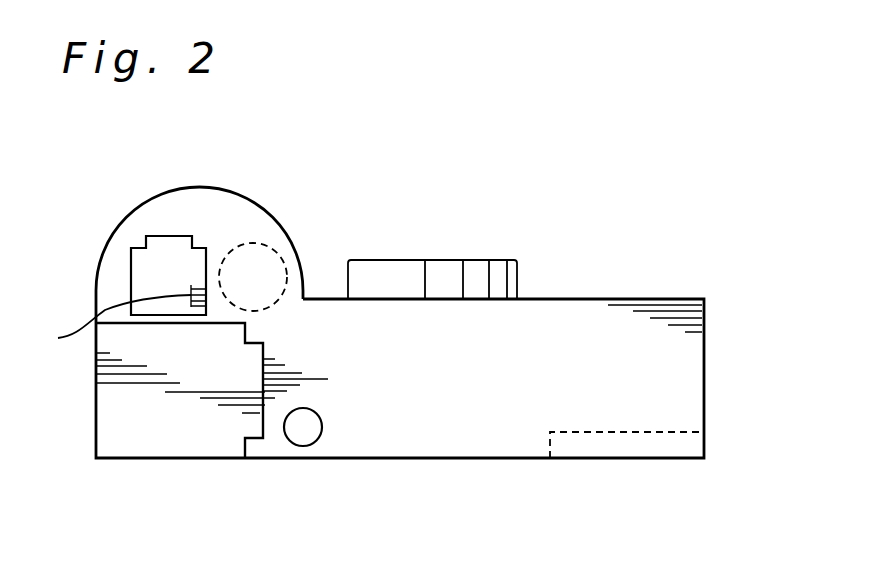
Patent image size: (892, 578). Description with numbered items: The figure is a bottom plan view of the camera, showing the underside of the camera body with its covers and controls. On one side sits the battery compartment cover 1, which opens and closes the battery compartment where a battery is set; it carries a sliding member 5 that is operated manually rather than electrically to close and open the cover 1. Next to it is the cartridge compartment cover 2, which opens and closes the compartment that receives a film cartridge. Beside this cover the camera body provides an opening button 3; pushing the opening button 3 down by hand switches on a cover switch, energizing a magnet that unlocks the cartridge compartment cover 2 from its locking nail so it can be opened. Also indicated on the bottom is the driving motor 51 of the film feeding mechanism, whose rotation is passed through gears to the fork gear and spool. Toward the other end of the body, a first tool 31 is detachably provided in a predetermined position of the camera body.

The battery compartment cover 1 is at (167, 252).
The cartridge compartment cover 2 is at (177, 430).
The opening button 3 is at (316, 434).
The sliding member 5 is at (109, 333).
The first tool 31 is at (653, 443).
The driving motor 51 is at (258, 272).